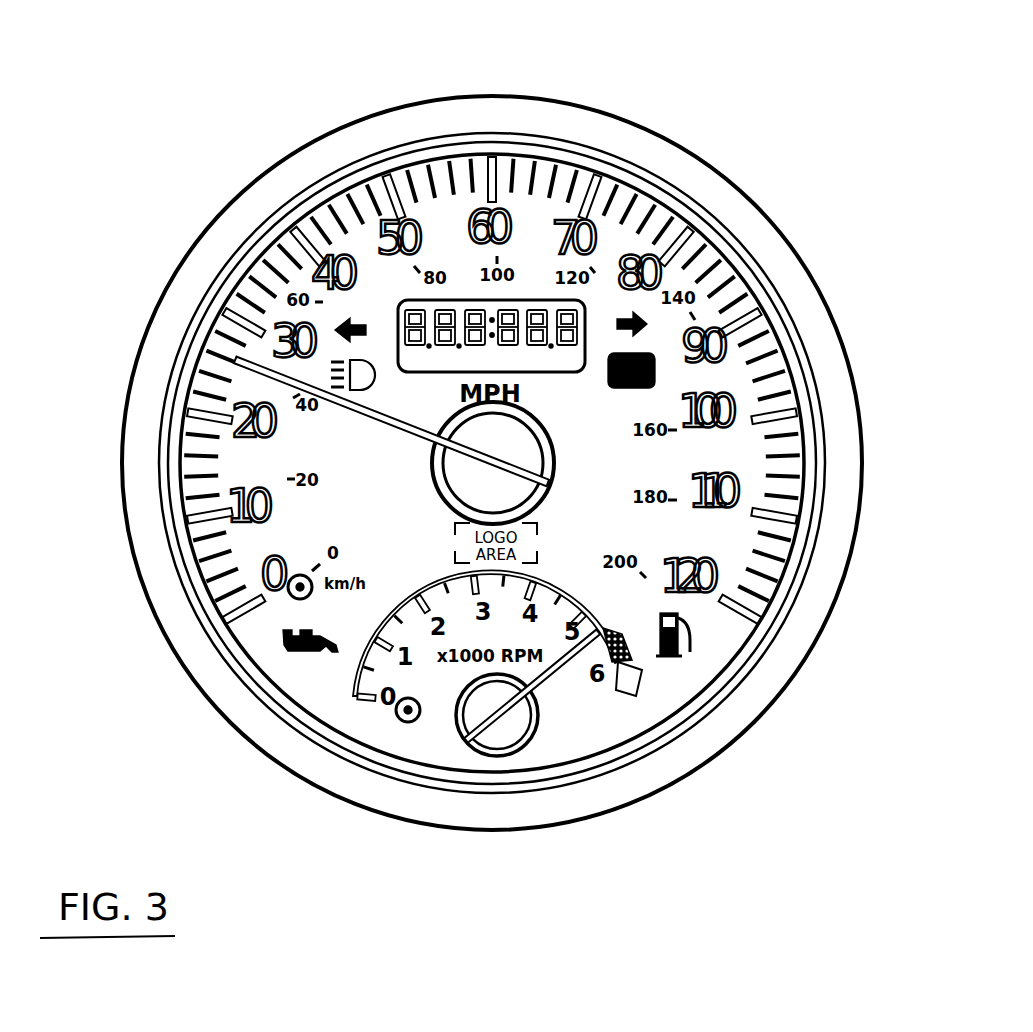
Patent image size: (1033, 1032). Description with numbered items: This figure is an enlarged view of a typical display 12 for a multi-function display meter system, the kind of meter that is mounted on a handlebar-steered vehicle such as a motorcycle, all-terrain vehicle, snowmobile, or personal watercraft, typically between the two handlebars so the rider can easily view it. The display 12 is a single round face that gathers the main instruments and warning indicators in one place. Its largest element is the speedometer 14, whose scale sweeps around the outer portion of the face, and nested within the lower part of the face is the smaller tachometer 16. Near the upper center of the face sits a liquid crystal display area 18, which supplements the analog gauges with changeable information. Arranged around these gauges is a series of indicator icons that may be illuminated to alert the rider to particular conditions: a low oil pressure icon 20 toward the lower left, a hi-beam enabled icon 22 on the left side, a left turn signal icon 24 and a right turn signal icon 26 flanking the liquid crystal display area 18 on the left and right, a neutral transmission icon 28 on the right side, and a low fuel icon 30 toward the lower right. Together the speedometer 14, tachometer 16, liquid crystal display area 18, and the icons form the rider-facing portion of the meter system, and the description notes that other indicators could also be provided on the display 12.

The display 12 is at (713, 34).
The speedometer 14 is at (258, 377).
The tachometer 16 is at (547, 683).
The liquid crystal display area 18 is at (455, 300).
The low oil pressure icon 20 is at (292, 647).
The hi-beam enabled icon 22 is at (335, 360).
The left turn signal icon 24 is at (347, 330).
The right turn signal icon 26 is at (643, 320).
The neutral transmission icon 28 is at (657, 377).
The low fuel icon 30 is at (693, 640).